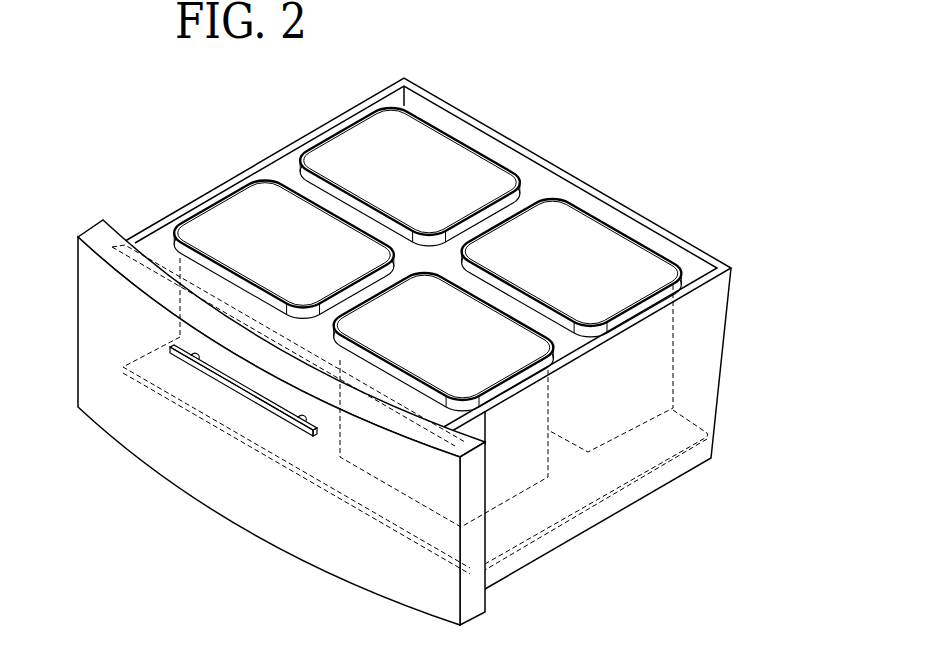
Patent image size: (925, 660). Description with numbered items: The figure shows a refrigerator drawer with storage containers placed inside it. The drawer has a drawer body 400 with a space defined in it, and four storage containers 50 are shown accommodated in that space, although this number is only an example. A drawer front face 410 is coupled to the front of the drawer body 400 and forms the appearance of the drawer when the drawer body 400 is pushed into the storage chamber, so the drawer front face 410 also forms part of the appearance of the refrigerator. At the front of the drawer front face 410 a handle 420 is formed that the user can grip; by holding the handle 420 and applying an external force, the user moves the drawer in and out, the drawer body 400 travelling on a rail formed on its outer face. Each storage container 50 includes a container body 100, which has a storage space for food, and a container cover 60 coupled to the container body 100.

The container body 100 is at (673, 343).
The storage container 50 is at (452, 141).
The container cover 60 is at (620, 262).
The drawer body 400 is at (393, 368).
The drawer front face 410 is at (212, 480).
The handle 420 is at (280, 410).